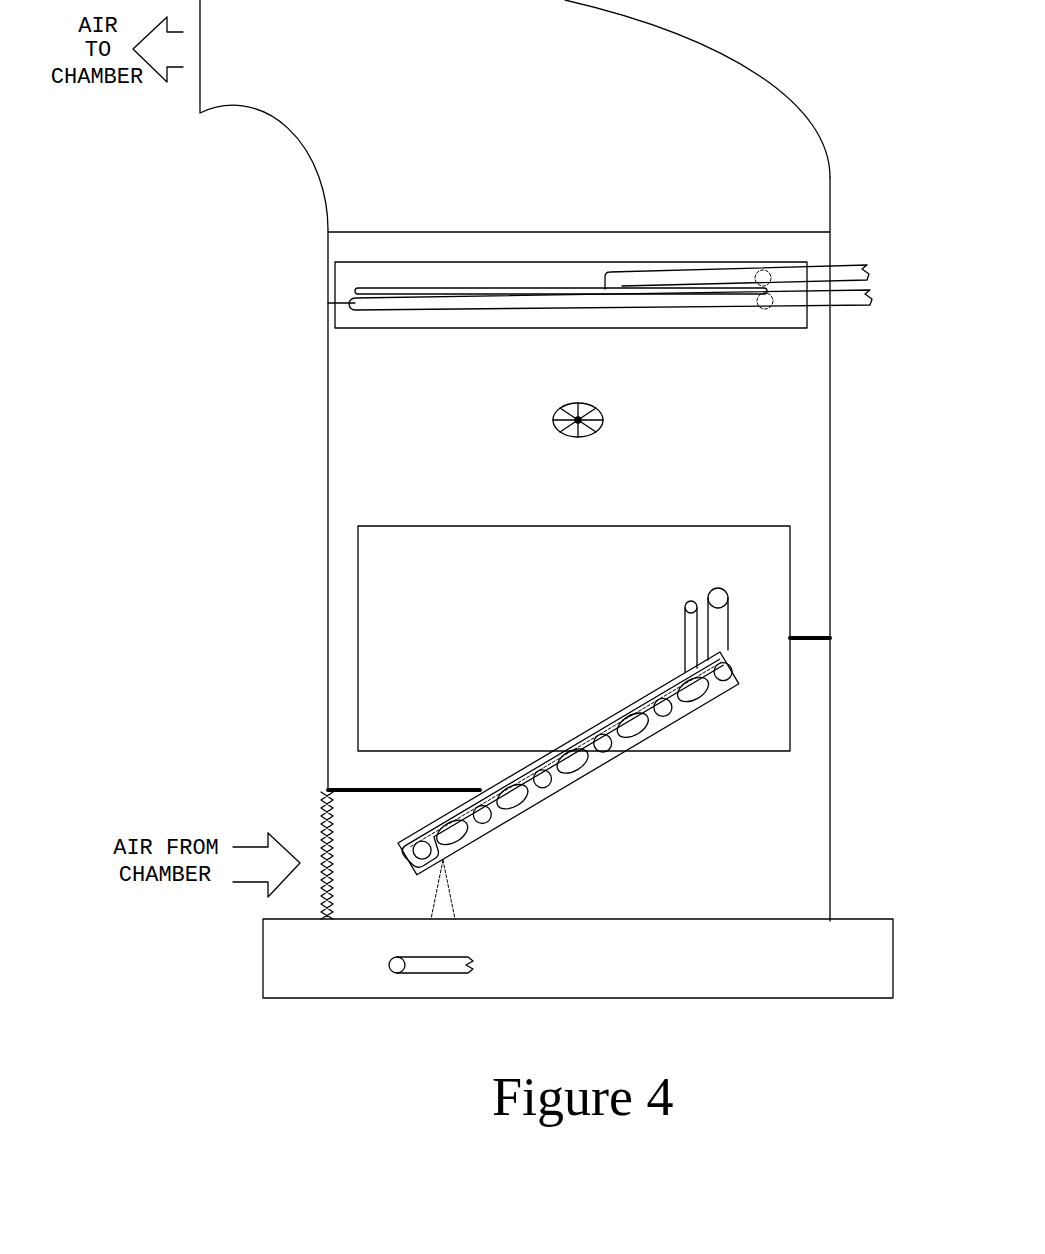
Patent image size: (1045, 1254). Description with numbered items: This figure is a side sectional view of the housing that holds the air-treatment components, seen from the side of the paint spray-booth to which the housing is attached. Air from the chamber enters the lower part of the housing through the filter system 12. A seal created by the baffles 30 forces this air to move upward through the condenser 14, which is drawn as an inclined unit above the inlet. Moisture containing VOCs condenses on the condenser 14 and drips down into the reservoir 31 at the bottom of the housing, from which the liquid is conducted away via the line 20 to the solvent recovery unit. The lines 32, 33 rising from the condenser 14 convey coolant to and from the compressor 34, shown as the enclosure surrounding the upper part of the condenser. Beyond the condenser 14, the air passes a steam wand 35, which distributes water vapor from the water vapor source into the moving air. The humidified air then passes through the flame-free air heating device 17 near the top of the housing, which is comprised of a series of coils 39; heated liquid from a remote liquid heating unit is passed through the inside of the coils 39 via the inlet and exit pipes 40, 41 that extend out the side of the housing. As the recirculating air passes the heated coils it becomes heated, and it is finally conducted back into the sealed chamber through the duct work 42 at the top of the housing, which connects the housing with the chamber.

The filter system 12 is at (332, 855).
The condenser 14 is at (602, 737).
The flame-free air heating device 17 is at (680, 328).
The line 20 is at (392, 967).
The baffles 30 is at (818, 638).
The reservoir 31 is at (862, 922).
The line 32 is at (685, 632).
The line 33 is at (728, 633).
The compressor 34 is at (620, 526).
The steam wand 35 is at (553, 424).
The coils 39 is at (470, 298).
The inlet pipe 40 is at (868, 305).
The exit pipe 41 is at (866, 265).
The duct work 42 is at (803, 115).